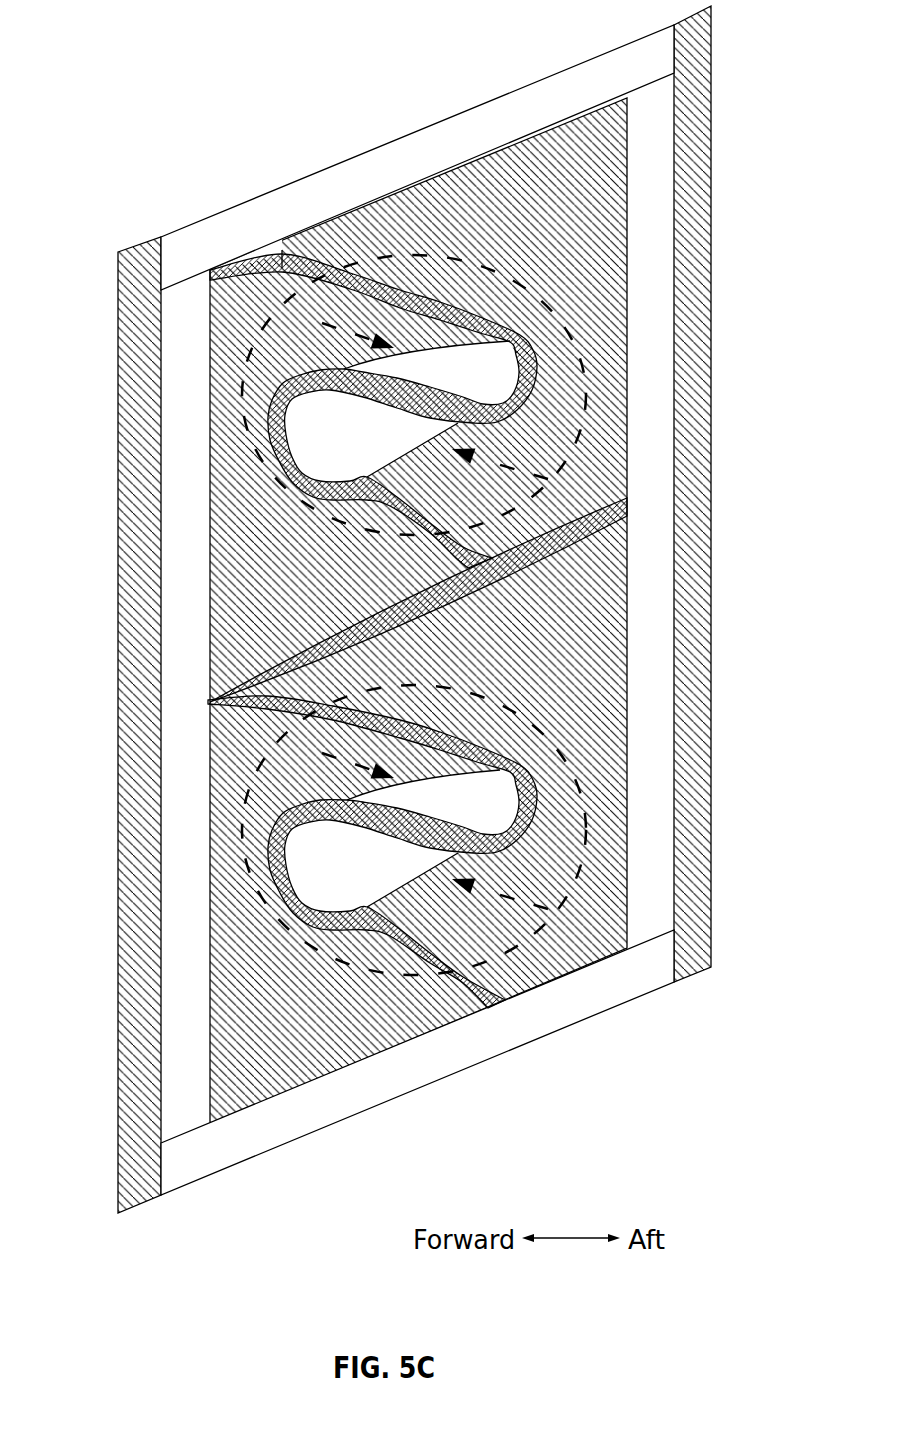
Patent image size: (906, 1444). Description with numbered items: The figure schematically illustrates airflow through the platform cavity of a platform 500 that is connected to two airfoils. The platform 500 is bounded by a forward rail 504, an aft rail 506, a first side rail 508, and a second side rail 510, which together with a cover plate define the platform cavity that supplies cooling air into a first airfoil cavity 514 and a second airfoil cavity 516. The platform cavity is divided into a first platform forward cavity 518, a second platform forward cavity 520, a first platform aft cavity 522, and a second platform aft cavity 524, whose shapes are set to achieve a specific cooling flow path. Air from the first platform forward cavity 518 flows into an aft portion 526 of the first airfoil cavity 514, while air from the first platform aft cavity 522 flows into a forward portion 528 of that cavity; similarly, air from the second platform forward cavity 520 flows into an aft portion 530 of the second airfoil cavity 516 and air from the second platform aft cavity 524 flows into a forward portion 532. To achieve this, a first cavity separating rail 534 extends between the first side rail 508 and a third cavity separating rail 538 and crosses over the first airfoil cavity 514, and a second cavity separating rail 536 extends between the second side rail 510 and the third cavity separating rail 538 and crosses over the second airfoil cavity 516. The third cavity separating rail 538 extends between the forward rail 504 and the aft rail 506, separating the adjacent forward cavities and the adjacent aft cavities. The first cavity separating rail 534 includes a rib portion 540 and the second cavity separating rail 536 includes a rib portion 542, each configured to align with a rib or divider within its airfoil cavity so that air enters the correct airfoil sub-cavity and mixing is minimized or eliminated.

The platform 500 is at (132, 1284).
The forward rail 504 is at (185, 688).
The aft rail 506 is at (655, 377).
The first side rail 508 is at (343, 1100).
The second side rail 510 is at (570, 84).
The first airfoil cavity 514 is at (352, 903).
The second airfoil cavity 516 is at (422, 356).
The first platform forward cavity 518 is at (287, 1056).
The second platform forward cavity 520 is at (287, 623).
The first platform aft cavity 522 is at (590, 633).
The second platform aft cavity 524 is at (590, 202).
The aft portion of the first airfoil cavity 526 is at (497, 820).
The forward portion of the first airfoil cavity 528 is at (369, 880).
The aft portion of the second airfoil cavity 530 is at (494, 386).
The forward portion of the second airfoil cavity 532 is at (365, 448).
The first cavity separating rail 534 is at (491, 1007).
The second cavity separating rail 536 is at (281, 253).
The third cavity separating rail 538 is at (568, 528).
The rib portion 540 is at (347, 800).
The rib portion 542 is at (387, 405).